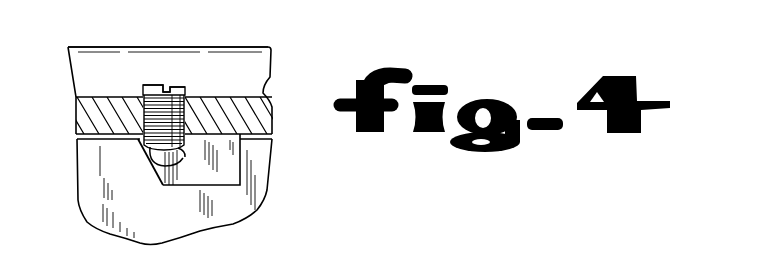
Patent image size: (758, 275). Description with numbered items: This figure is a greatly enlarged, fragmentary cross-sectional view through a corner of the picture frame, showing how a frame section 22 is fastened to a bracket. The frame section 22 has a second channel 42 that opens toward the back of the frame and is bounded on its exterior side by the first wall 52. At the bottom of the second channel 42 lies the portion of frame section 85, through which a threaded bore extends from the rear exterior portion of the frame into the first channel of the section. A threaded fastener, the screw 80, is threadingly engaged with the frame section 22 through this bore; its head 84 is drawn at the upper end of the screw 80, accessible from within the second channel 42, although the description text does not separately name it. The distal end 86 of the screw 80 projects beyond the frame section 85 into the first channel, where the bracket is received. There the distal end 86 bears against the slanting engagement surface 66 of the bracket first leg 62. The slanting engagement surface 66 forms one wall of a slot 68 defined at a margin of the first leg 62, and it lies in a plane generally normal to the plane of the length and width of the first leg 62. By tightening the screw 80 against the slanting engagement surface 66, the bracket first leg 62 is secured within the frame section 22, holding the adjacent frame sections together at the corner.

The frame section 22 is at (62, 153).
The second channel 42 is at (80, 80).
The first wall 52 is at (228, 57).
The first leg 62 is at (95, 170).
The slanting engagement surface 66 is at (162, 177).
The slot 68 is at (235, 166).
The screw 80 is at (189, 123).
The screw head 84 is at (147, 85).
The frame section portion at bottom of second channel 85 is at (100, 109).
The distal end 86 is at (183, 158).